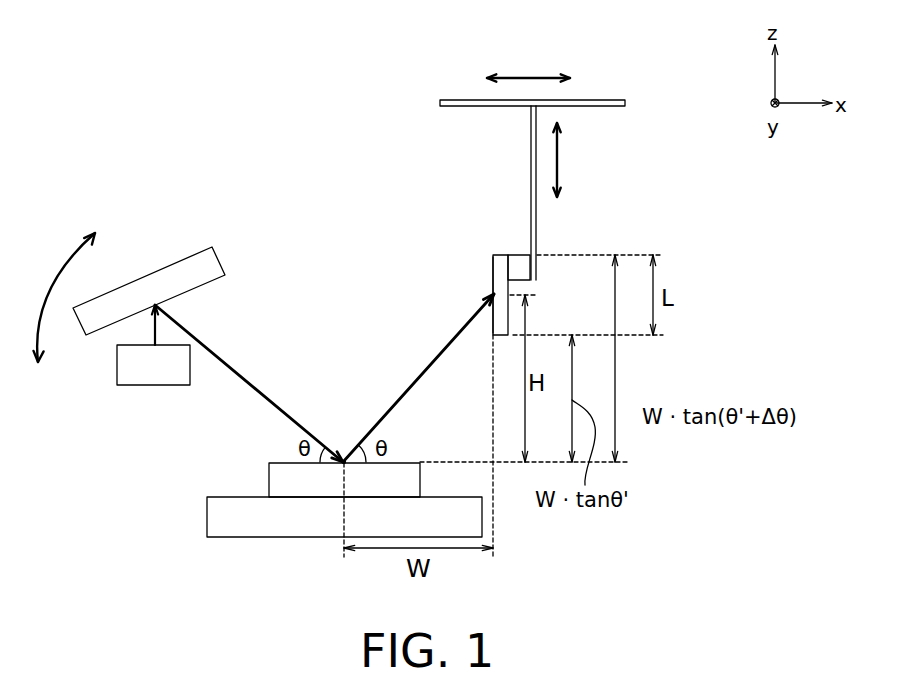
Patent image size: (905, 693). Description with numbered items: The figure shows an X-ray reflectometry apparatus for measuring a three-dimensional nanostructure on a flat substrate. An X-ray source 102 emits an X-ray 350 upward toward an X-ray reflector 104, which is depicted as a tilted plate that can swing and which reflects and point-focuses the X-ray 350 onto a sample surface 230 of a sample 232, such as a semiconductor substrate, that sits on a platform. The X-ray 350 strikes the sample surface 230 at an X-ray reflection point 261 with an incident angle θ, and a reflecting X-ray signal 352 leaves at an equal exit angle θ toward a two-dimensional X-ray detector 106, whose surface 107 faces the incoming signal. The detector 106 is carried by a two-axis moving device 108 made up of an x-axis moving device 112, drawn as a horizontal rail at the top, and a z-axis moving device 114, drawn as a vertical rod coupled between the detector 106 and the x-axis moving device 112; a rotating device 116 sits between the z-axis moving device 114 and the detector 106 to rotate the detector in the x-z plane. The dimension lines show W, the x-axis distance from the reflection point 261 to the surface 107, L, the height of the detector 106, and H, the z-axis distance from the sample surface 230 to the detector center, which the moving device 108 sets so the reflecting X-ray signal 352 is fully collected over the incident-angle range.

The X-ray source 102 is at (153, 368).
The X-ray reflector 104 is at (163, 285).
The 2-dimensional X-ray detector 106 is at (502, 265).
The surface of the 2-dimensional X-ray detector 107 is at (492, 277).
The two-axis moving device 108 is at (589, 190).
The x-axis moving device 112 is at (597, 106).
The z-axis moving device 114 is at (533, 225).
The rotating device 116 is at (522, 265).
The sample surface 230 is at (280, 461).
The sample 232 is at (290, 482).
The X-ray reflection point 261 is at (345, 459).
The X-ray 350 is at (153, 323).
The reflecting X-ray signal 352 is at (415, 375).